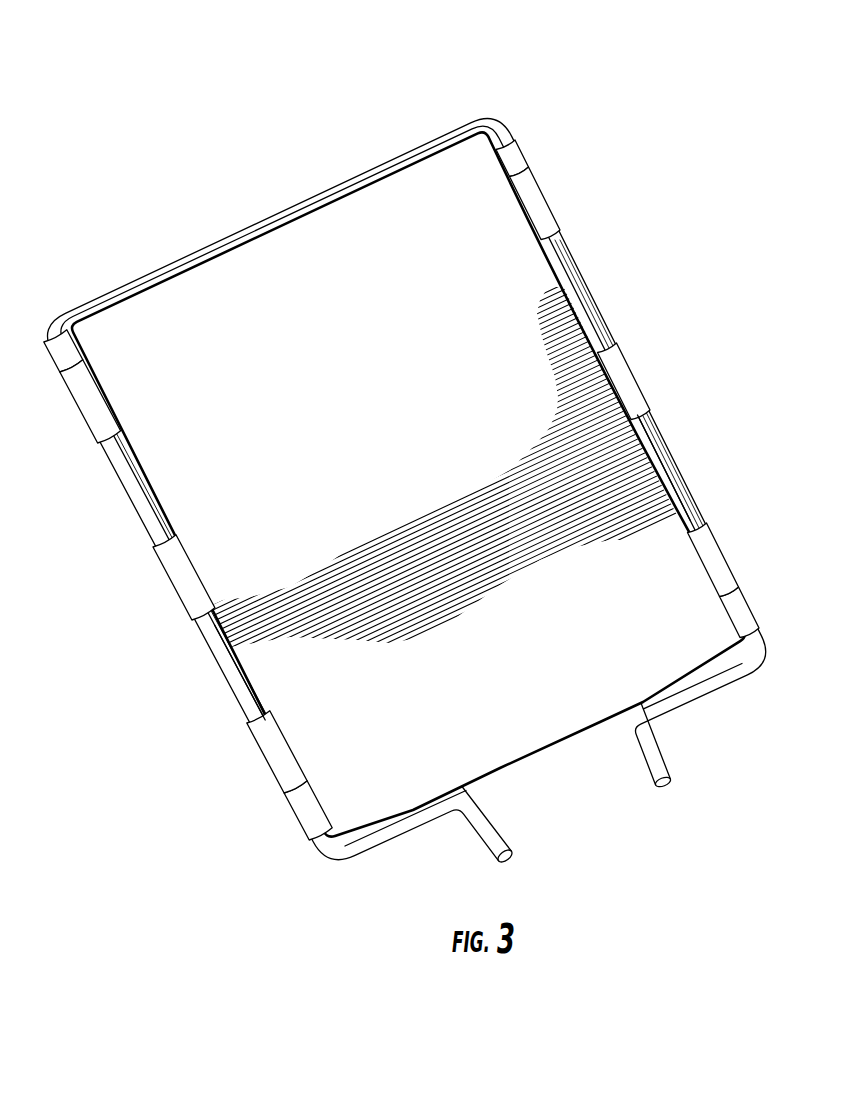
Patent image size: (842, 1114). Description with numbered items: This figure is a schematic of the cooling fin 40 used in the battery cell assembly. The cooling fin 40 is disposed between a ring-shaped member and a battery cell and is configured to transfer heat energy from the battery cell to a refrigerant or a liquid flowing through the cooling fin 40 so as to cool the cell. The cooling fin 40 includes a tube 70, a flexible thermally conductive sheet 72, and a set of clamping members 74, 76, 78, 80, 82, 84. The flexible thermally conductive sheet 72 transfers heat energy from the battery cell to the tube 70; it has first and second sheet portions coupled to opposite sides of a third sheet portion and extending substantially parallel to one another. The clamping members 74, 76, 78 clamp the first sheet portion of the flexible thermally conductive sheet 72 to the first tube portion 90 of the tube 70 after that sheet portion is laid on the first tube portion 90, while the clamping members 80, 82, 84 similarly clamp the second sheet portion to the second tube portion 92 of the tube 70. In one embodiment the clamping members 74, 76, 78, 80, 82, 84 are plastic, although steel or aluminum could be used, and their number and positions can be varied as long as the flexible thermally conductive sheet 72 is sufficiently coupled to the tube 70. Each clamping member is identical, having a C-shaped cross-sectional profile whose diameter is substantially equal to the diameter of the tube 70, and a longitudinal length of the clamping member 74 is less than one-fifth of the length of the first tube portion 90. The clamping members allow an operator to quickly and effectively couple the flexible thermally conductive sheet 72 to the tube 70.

The cooling fin 40 is at (404, 446).
The tube 70 is at (272, 215).
The flexible thermally conductive sheet 72 is at (524, 278).
The clamping member 74 is at (278, 773).
The clamping member 76 is at (178, 582).
The clamping member 78 is at (99, 430).
The clamping member 80 is at (713, 556).
The clamping member 82 is at (612, 378).
The clamping member 84 is at (520, 178).
The first tube portion 90 is at (217, 682).
The second tube portion 92 is at (656, 455).